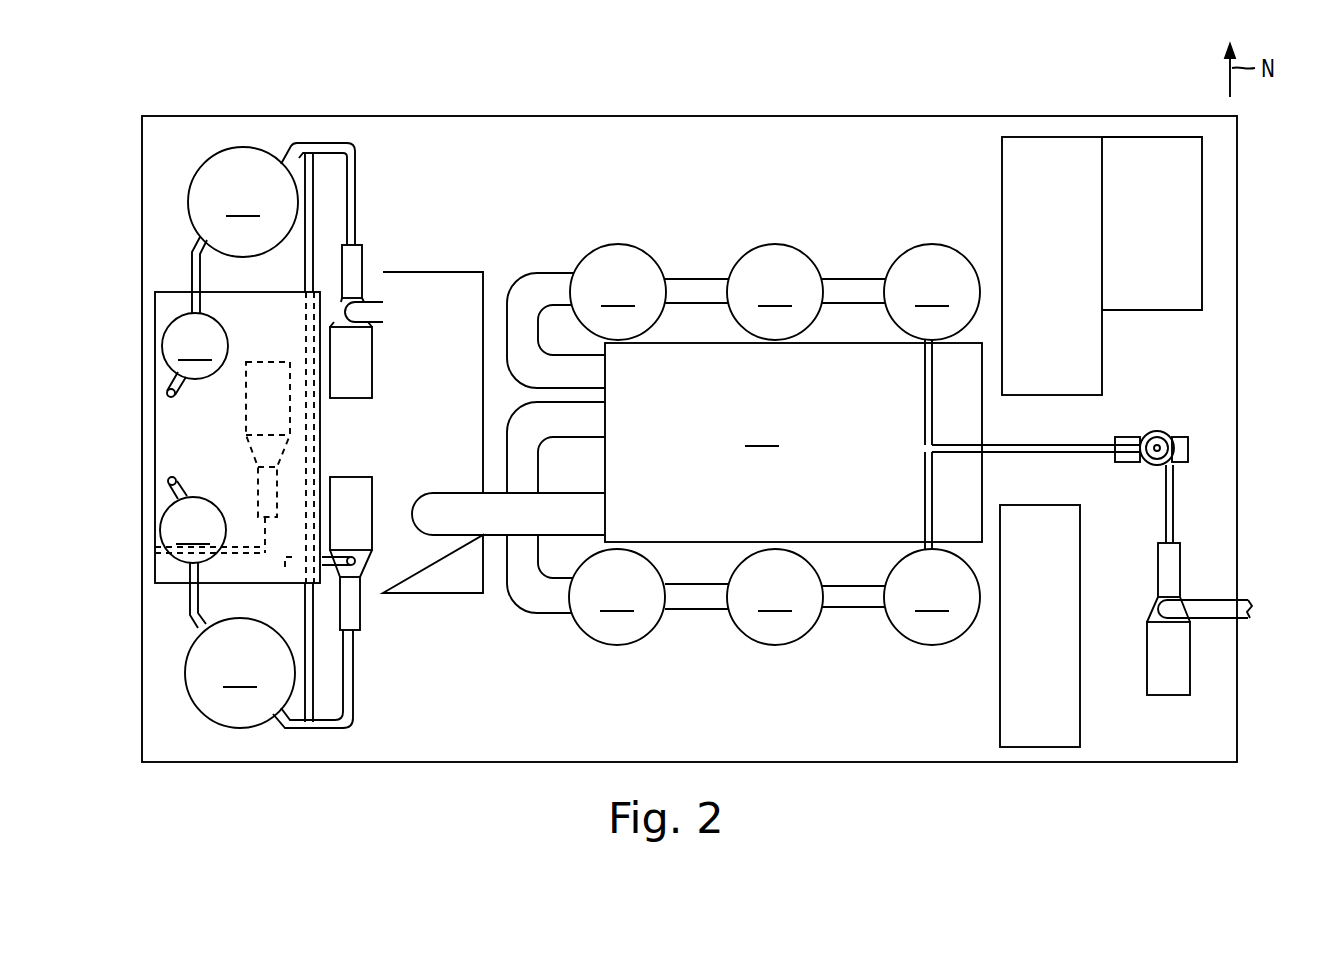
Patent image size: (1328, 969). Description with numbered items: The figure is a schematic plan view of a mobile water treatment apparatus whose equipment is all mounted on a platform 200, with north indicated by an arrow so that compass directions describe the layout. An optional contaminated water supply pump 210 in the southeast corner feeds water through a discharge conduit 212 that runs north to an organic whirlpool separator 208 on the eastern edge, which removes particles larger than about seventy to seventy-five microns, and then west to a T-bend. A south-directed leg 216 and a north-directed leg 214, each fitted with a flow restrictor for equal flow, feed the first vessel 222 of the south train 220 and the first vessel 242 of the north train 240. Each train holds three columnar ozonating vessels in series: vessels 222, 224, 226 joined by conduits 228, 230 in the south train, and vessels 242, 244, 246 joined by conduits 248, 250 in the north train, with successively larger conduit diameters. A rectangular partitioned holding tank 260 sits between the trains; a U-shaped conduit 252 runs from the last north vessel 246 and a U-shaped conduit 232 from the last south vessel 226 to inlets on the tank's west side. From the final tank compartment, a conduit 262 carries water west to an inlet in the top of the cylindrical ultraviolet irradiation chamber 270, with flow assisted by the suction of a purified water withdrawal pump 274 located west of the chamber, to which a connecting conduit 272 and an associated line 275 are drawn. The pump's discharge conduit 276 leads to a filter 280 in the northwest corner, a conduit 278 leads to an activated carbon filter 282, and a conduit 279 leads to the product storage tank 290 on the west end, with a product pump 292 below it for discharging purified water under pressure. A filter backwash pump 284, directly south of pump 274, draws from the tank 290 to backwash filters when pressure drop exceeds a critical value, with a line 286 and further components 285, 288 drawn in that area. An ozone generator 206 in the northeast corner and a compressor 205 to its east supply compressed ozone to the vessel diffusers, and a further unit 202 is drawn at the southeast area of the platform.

The platform 200 is at (775, 116).
The building 202 is at (1080, 710).
The compressor 205 is at (1202, 222).
The ozone generator 206 is at (1040, 210).
The organic whirlpool separator 208 is at (1165, 432).
The contaminated water supply pump 210 is at (1194, 576).
The discharge conduit 212 is at (1022, 445).
The north-directed leg 214 is at (922, 402).
The south-directed leg 216 is at (922, 488).
The south train 220 is at (817, 641).
The first columnar vessel of south train 222 is at (932, 597).
The columnar vessel 224 is at (775, 597).
The last columnar vessel of south train 226 is at (617, 597).
The conduit 228 is at (853, 618).
The conduit 230 is at (683, 611).
The U-shaped conduit 232 is at (517, 565).
The north train 240 is at (821, 245).
The first columnar vessel of north train 242 is at (932, 292).
The columnar vessel 244 is at (775, 292).
The last columnar vessel of north train 246 is at (618, 292).
The conduit 248 is at (838, 304).
The conduit 250 is at (683, 306).
The U-shaped conduit 252 is at (530, 275).
The partitioned holding tank 260 is at (793, 442).
The conduit 262 is at (460, 525).
The ultraviolet irradiation chamber 270 is at (437, 272).
The connecting pipe 272 is at (370, 300).
The purified water withdrawal pump 274 is at (363, 247).
The vertical pipe 275 is at (315, 202).
The discharge conduit 276 is at (312, 143).
The conduit 278 is at (190, 272).
The conduit 279 is at (168, 386).
The filter 280 is at (243, 202).
The activated carbon filter 282 is at (195, 346).
The filter backwash pump 284 is at (355, 612).
The storage vessel 285 is at (240, 673).
The pipe 286 is at (337, 722).
The vessel 288 is at (193, 520).
The product storage tank 290 is at (173, 460).
The product pump 292 is at (247, 412).